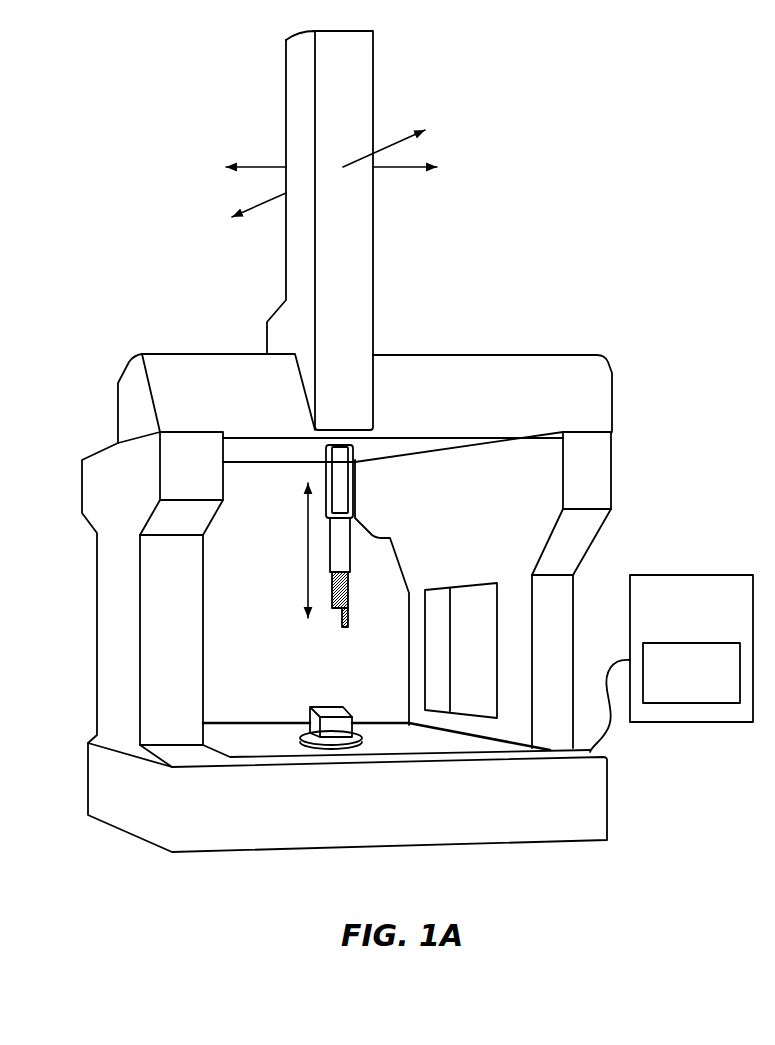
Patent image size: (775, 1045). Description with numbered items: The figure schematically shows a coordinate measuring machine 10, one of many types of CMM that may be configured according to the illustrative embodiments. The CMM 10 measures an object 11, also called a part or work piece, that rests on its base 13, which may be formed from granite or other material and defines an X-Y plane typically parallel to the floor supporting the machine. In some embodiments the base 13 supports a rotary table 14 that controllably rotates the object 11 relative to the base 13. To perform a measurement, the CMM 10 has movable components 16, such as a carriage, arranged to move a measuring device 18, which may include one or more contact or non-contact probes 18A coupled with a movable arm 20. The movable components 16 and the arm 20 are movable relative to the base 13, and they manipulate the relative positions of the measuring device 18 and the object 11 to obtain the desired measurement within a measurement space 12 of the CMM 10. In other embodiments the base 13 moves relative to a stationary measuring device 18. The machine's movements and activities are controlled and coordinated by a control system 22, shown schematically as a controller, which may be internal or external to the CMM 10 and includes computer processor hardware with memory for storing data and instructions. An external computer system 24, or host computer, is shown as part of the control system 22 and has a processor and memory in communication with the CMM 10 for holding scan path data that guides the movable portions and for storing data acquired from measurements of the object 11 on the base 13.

The coordinate measuring machine 10 is at (550, 292).
The object 11 is at (334, 707).
The measurement space 12 is at (230, 680).
The base 13 is at (622, 805).
The rotary table 14 is at (300, 733).
The movable components 16 is at (427, 355).
The measuring device 18 is at (356, 566).
The probes 18A is at (334, 624).
The movable arm 20 is at (349, 478).
The control system 22 is at (671, 663).
The external computer system 24 is at (691, 673).